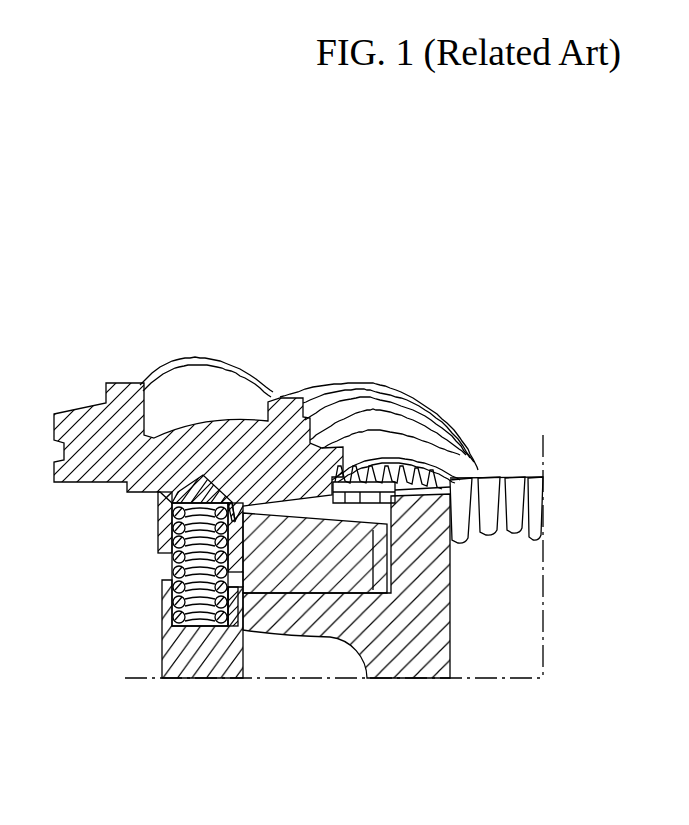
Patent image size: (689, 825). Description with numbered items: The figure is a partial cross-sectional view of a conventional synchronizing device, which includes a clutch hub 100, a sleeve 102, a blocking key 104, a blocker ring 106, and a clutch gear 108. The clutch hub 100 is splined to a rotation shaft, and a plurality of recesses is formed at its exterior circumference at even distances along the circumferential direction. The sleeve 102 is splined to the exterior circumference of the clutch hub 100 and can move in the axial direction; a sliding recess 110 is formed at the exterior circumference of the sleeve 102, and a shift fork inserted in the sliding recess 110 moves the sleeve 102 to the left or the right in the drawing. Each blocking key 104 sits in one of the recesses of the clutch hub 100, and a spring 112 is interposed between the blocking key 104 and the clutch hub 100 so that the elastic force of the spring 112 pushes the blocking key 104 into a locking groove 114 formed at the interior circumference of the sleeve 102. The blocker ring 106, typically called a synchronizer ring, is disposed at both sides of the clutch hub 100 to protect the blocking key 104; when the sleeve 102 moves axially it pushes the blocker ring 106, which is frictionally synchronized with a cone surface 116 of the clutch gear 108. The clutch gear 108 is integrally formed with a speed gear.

The clutch hub 100 is at (192, 652).
The sleeve 102 is at (90, 445).
The blocking key 104 is at (163, 525).
The blocker ring 106 is at (343, 567).
The clutch gear 108 is at (505, 591).
The sliding recess 110 is at (240, 413).
The spring 112 is at (170, 573).
The locking groove 114 is at (191, 493).
The cone surface 116 is at (308, 574).